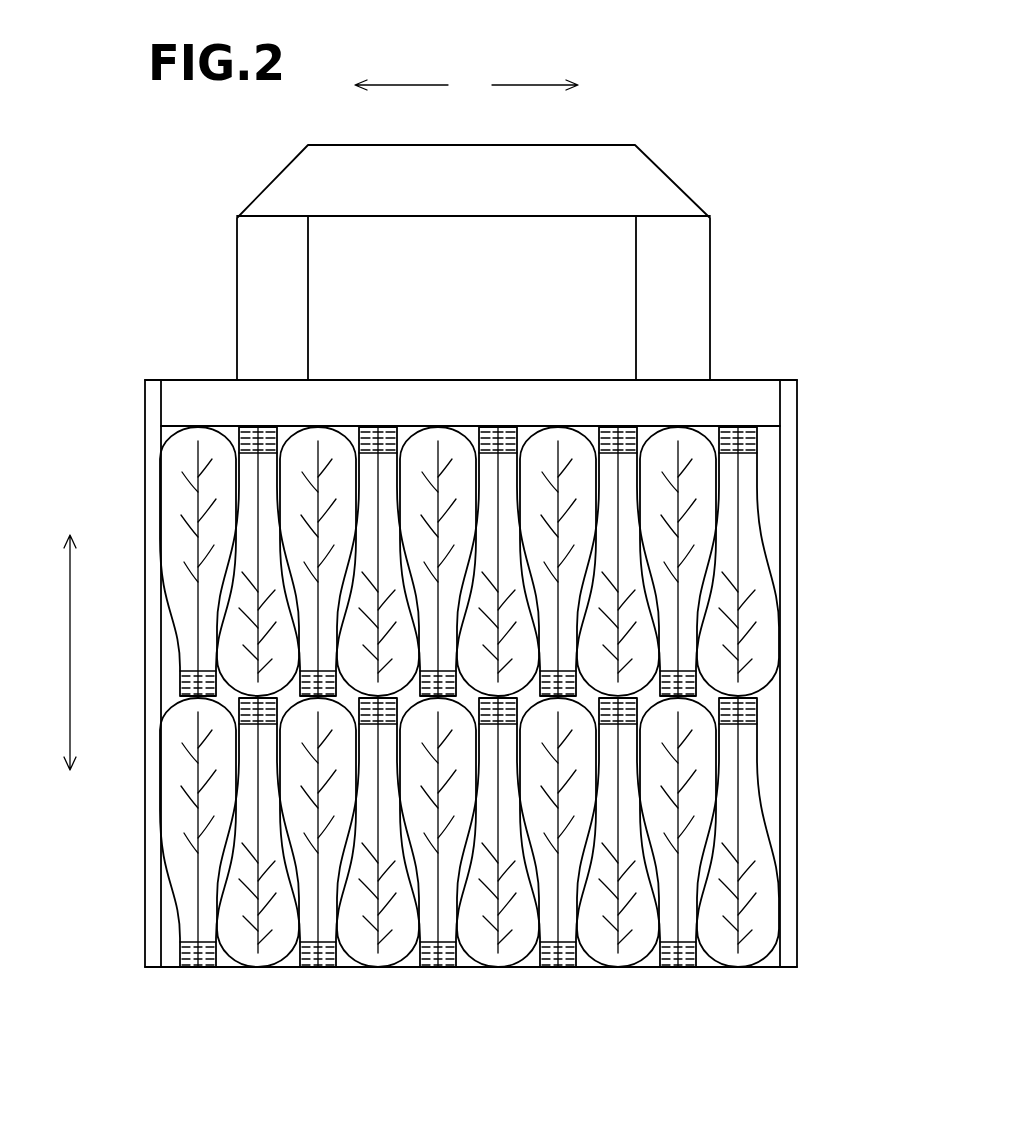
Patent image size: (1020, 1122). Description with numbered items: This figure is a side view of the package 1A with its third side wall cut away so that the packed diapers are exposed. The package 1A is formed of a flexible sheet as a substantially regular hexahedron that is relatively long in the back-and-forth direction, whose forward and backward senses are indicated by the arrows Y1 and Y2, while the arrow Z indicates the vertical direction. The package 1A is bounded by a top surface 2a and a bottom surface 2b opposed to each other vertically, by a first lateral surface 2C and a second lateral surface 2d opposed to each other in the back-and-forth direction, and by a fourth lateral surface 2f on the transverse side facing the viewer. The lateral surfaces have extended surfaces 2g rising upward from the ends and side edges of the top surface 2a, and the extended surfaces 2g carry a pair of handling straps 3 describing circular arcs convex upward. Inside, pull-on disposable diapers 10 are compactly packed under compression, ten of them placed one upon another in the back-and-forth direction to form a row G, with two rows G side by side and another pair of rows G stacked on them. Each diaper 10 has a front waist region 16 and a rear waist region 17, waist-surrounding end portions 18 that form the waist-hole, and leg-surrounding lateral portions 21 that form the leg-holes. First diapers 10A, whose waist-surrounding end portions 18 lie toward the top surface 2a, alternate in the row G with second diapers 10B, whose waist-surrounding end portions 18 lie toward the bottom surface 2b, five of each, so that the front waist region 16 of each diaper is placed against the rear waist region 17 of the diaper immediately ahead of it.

The package 1A is at (804, 307).
The top surface 2a is at (433, 425).
The bottom surface 2b is at (587, 967).
The first lateral surface 2C is at (780, 875).
The second lateral surface 2d is at (147, 518).
The fourth lateral surface 2f is at (197, 394).
The extended surfaces 2g is at (337, 397).
The handling straps 3 is at (612, 150).
The pull-on disposable diaper 10 is at (535, 450).
The first diaper 10A is at (748, 552).
The second diaper 10B is at (175, 507).
The front waist region 16 is at (177, 588).
The rear waist region 17 is at (217, 542).
The waist-surrounding end portions 18 is at (386, 428).
The leg-surrounding lateral portions 21 is at (543, 518).
The row G is at (162, 659).
The vertical direction Z is at (70, 648).
The forward direction Y1 is at (531, 83).
The backward direction Y2 is at (408, 83).